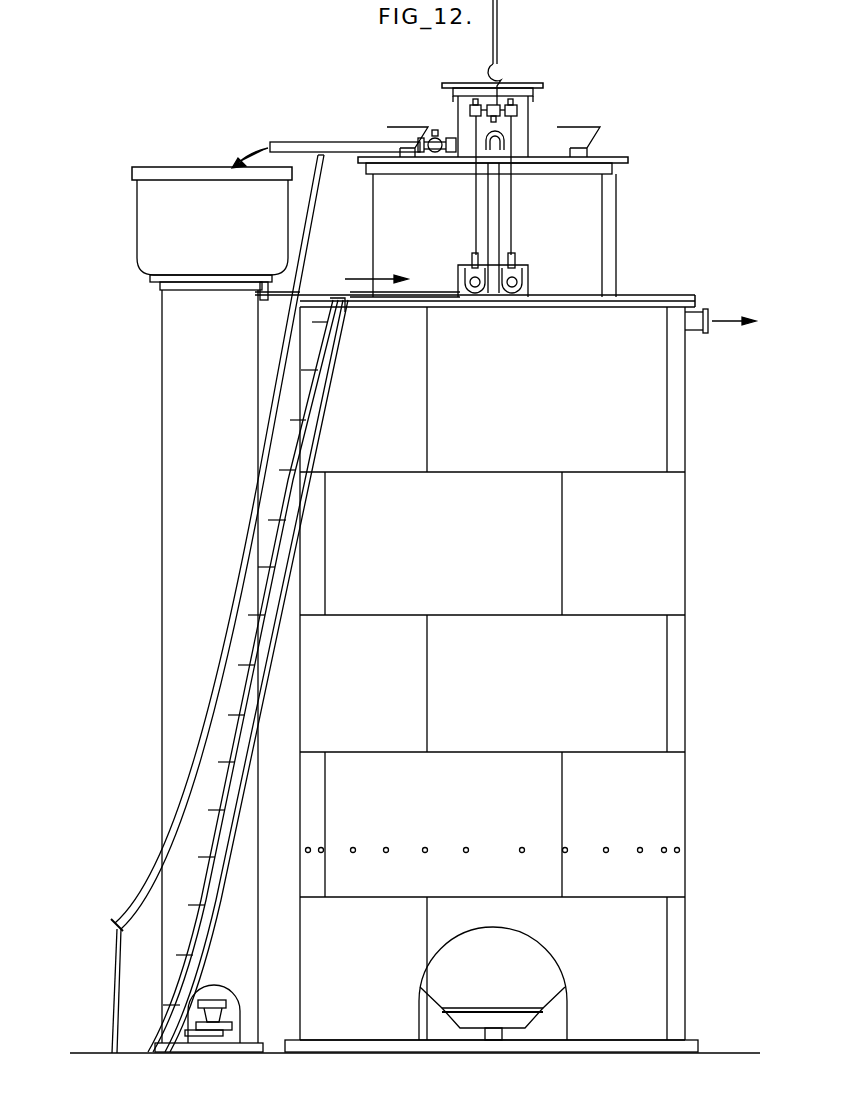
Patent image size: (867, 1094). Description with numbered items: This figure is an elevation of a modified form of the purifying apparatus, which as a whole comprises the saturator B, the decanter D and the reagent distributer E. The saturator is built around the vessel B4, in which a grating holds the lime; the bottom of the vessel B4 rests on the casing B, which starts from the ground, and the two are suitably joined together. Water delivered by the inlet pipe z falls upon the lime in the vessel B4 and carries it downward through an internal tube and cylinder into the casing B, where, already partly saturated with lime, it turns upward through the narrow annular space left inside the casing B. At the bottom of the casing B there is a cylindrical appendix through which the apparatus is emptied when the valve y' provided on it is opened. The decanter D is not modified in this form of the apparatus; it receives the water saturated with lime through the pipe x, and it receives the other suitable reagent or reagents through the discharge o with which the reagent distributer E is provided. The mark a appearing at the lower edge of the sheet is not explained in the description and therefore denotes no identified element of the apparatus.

The vessel B4 is at (212, 224).
The saturator casing B is at (209, 667).
The decanter D is at (520, 679).
The reagent distributer E is at (493, 148).
The inlet pipe z is at (326, 146).
The pipe x is at (283, 296).
The discharge o is at (526, 277).
The valve y' is at (208, 1038).
The ground base a is at (628, 1084).